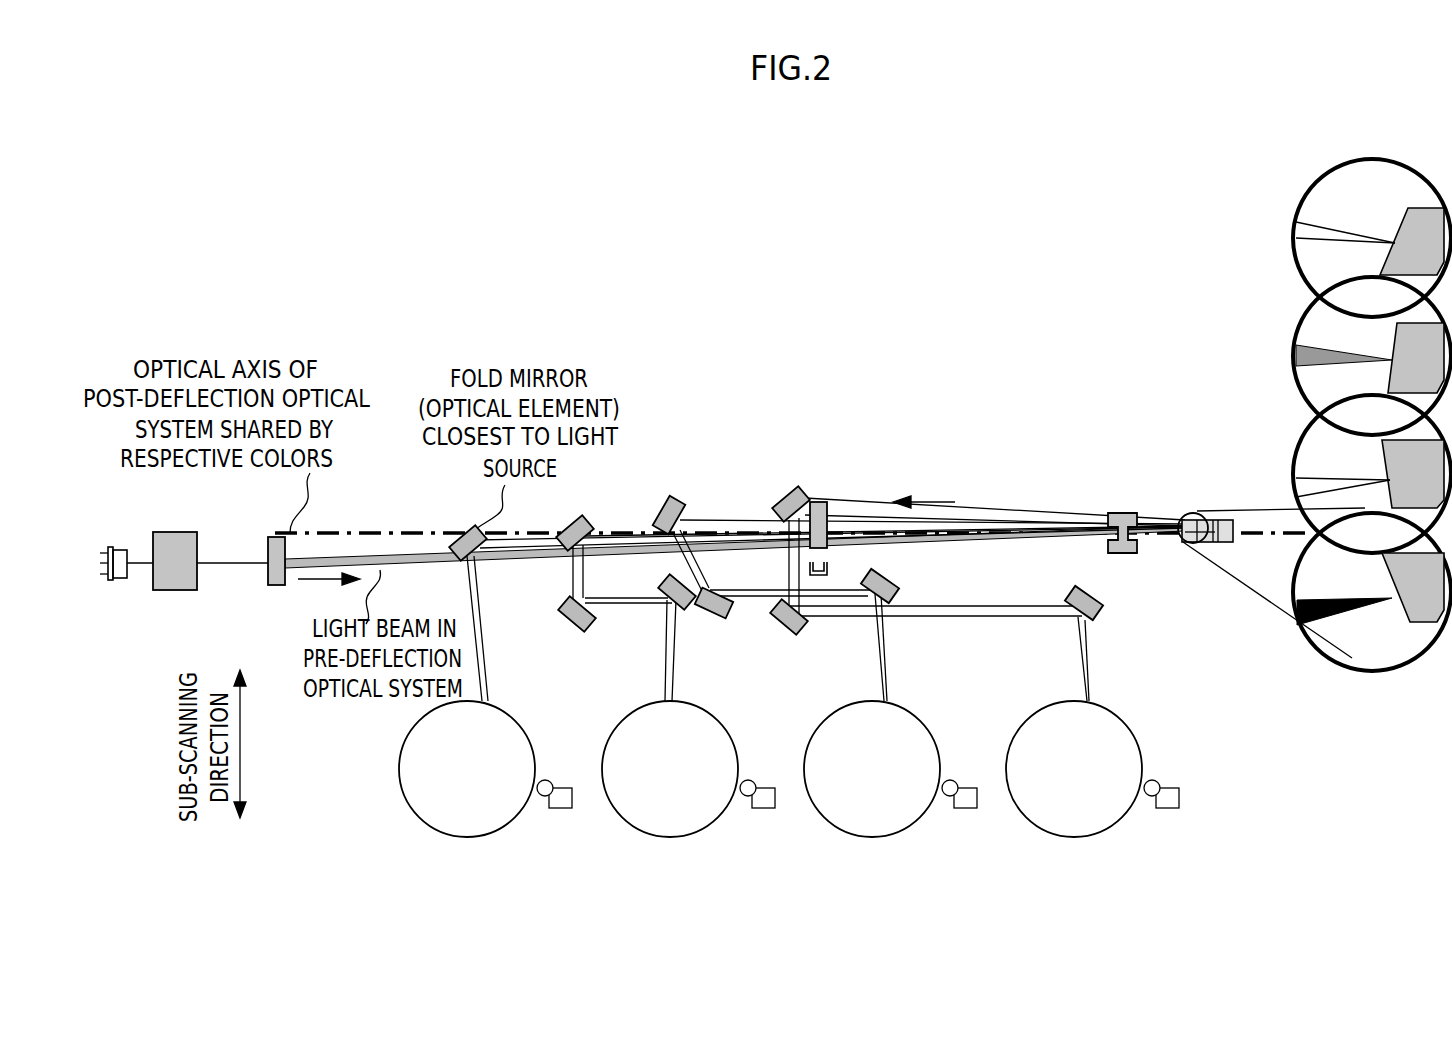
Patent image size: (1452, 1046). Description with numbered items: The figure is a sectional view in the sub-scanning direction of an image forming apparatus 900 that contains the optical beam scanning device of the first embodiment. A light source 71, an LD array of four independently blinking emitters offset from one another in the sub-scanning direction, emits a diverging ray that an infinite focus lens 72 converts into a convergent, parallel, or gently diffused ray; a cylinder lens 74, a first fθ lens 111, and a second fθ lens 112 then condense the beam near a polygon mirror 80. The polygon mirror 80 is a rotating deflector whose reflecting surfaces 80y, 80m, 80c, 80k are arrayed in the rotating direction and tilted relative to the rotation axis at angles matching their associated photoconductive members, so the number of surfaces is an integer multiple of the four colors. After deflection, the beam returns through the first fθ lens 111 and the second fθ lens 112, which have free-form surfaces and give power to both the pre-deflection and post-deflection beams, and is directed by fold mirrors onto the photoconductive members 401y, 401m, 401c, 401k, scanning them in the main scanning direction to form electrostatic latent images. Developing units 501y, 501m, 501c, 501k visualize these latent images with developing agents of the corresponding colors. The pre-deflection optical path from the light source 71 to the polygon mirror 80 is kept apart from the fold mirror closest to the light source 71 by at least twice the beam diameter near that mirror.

The light source 71 is at (120, 580).
The infinite focus lens 72 is at (178, 592).
The cylinder lens 74 is at (277, 587).
The polygon mirror 80 is at (1212, 520).
The reflecting surface 80y is at (1400, 222).
The reflecting surface 80m is at (1395, 350).
The reflecting surface 80c is at (1388, 467).
The reflecting surface 80k is at (1388, 582).
The fθ 1 lens 111 is at (1120, 513).
The fθ 2 lens 112 is at (817, 502).
The image forming apparatus 900 is at (713, 462).
The photoconductive member 401k is at (518, 812).
The photoconductive member 401c is at (721, 812).
The photoconductive member 401m is at (923, 812).
The photoconductive member 401y is at (1125, 812).
The developing unit 501k is at (554, 786).
The developing unit 501c is at (757, 786).
The developing unit 501m is at (959, 786).
The developing unit 501y is at (1161, 786).